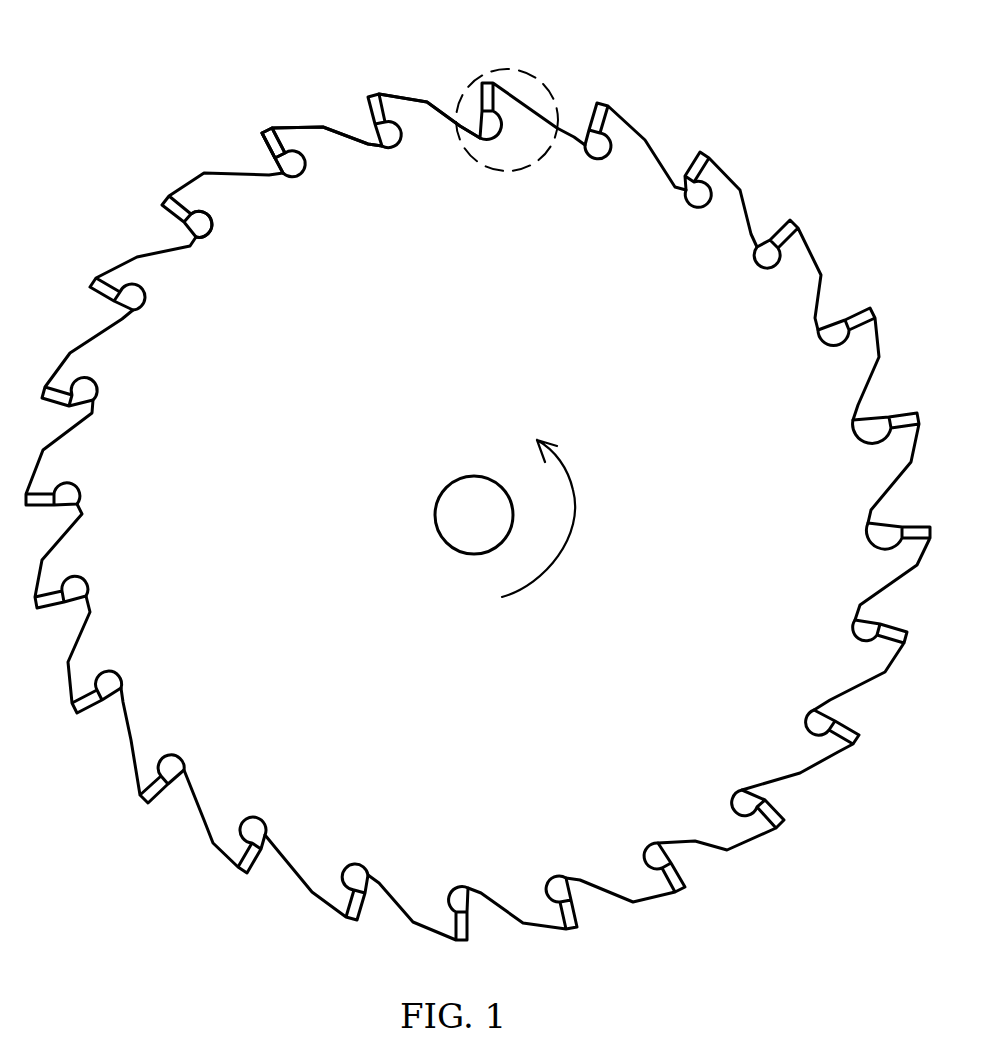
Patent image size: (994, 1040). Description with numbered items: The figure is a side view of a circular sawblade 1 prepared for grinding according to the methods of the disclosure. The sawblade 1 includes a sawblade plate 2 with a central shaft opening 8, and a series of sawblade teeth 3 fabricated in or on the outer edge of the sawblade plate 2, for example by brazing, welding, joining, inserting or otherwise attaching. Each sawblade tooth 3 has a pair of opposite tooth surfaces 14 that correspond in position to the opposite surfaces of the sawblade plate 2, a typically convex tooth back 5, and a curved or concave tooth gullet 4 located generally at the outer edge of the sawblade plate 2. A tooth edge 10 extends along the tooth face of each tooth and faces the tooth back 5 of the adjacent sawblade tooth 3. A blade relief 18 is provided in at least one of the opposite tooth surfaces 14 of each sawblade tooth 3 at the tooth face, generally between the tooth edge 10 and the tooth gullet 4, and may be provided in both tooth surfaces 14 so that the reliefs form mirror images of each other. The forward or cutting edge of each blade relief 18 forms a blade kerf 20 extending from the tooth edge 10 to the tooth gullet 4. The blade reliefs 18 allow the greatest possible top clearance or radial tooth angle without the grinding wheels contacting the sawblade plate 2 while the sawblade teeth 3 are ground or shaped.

The sawblade 1 is at (146, 99).
The sawblade plate 2 is at (508, 70).
The sawblade teeth 3 is at (272, 120).
The tooth gullet 4 is at (326, 155).
The tooth back 5 is at (298, 130).
The central shaft opening 8 is at (440, 497).
The tooth edge 10 is at (256, 144).
The tooth surfaces 14 is at (408, 117).
The blade relief 18 is at (613, 145).
The blade kerf 20 is at (190, 236).